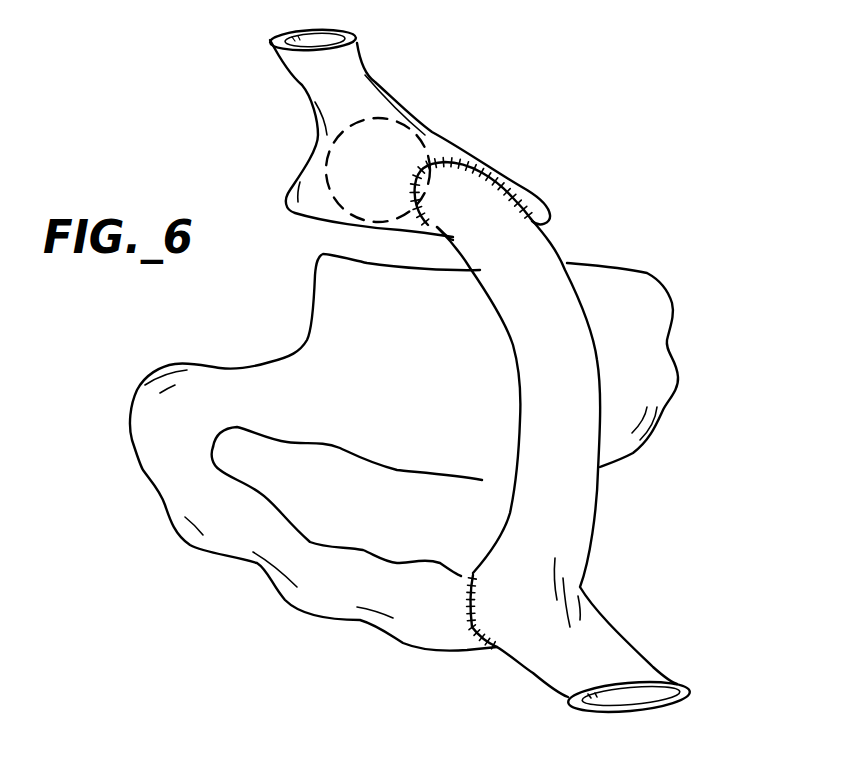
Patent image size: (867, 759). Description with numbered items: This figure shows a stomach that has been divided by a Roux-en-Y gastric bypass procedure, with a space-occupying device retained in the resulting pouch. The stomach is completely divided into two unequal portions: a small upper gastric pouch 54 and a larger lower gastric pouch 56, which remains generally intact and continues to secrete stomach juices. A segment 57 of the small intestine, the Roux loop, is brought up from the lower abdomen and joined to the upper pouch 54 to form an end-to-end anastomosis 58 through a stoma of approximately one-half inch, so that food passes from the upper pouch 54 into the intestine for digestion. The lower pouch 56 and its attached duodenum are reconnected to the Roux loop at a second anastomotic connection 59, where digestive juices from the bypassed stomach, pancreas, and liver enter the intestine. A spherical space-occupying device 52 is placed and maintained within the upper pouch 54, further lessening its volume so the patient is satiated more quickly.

The space-occupying device 52 is at (378, 116).
The upper gastric pouch 54 is at (459, 158).
The lower gastric pouch 56 is at (638, 372).
The segment of the small intestine 57 is at (563, 247).
The end-to-end anastomosis 58 is at (510, 193).
The anastomotic connection 59 is at (472, 627).